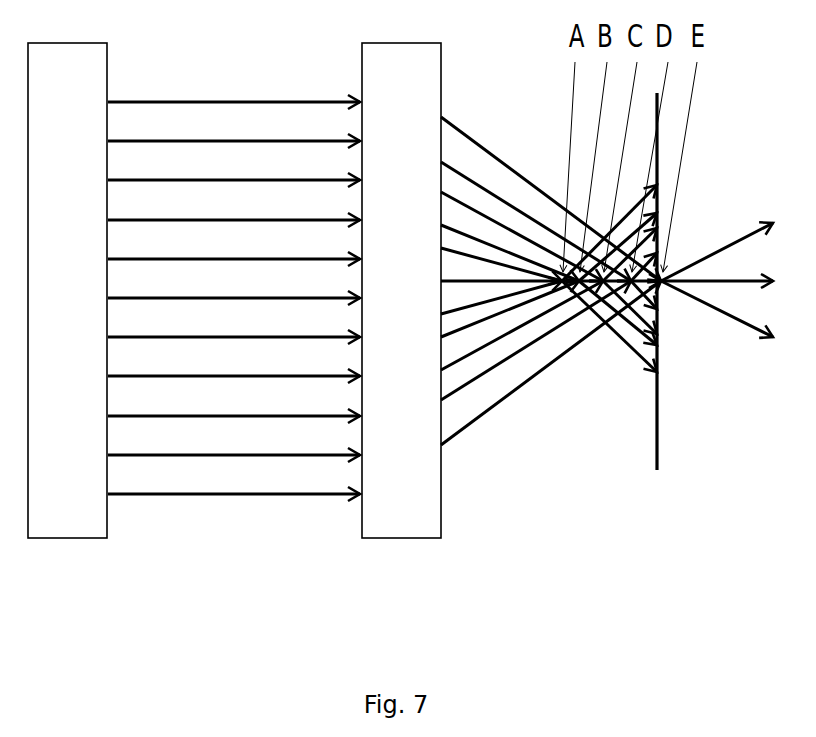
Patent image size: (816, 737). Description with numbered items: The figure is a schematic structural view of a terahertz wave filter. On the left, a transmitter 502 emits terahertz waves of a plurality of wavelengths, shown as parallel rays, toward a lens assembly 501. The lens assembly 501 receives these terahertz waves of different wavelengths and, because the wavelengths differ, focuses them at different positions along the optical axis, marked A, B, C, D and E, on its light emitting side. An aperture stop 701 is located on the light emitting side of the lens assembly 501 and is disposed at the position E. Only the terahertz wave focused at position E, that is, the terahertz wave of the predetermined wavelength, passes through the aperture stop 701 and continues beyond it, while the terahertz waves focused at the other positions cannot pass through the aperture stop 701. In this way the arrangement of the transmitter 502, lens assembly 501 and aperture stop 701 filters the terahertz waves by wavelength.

The transmitter 502 is at (58, 538).
The lens assembly 501 is at (398, 538).
The aperture stop 701 is at (657, 470).